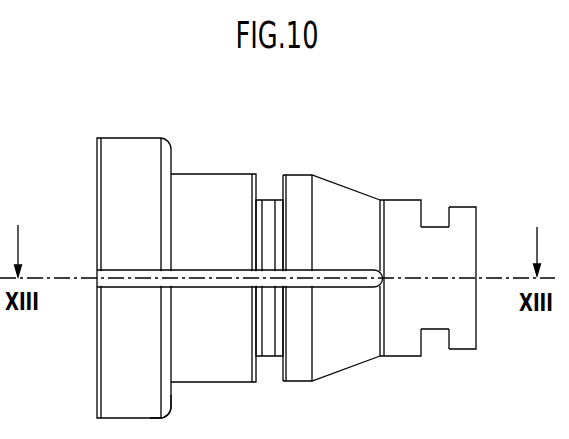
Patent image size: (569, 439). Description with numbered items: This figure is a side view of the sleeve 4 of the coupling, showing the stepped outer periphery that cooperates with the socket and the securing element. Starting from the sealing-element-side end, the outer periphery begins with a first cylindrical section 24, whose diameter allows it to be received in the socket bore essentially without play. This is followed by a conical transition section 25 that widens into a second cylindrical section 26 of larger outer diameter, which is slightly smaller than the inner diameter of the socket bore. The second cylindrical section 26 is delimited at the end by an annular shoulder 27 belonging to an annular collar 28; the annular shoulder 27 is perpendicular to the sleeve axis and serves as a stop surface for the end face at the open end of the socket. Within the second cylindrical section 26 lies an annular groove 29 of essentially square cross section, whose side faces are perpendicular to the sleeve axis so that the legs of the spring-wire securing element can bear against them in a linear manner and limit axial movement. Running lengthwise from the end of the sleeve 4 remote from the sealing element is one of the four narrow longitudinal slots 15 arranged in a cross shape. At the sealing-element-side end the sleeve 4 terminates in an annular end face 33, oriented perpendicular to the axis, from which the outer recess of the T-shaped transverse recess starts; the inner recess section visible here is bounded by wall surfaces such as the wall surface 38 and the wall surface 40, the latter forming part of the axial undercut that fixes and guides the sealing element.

The sleeve 4 is at (309, 259).
The longitudinal slot 15 is at (213, 287).
The first cylindrical section 24 is at (403, 199).
The conical transition section 25 is at (347, 187).
The second cylindrical section 26 is at (195, 190).
The annular shoulder 27 is at (172, 398).
The annular collar 28 is at (131, 152).
The annular groove 29 is at (267, 192).
The annular end face 33 is at (476, 232).
The wall surface 38 is at (424, 348).
The wall surface 40 is at (445, 348).